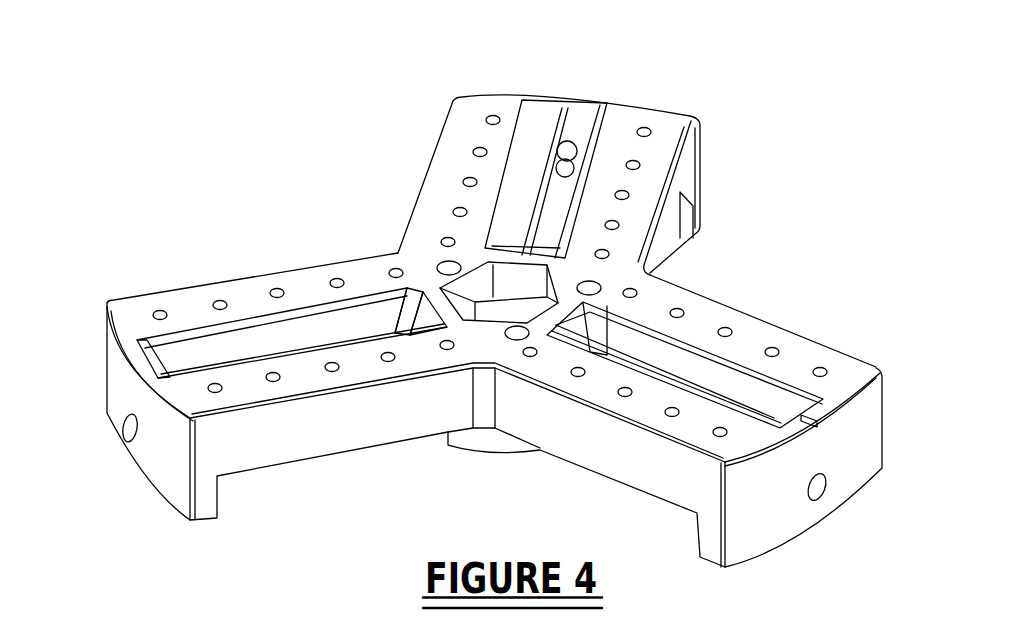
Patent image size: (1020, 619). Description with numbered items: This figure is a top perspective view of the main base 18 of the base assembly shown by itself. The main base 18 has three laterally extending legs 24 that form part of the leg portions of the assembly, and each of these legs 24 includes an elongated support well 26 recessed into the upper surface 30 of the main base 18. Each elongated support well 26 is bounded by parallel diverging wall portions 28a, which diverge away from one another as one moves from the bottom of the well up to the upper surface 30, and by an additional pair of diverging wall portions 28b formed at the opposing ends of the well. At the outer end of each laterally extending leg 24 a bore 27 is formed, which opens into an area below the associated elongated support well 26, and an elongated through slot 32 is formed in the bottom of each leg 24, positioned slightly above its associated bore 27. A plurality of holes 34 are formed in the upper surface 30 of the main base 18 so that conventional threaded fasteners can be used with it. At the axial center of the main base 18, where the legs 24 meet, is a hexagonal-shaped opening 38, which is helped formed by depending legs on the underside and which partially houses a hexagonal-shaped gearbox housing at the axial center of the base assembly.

The main base 18 is at (229, 191).
The laterally extending legs 24 is at (437, 142).
The elongated support well 26 is at (225, 336).
The bore 27 is at (124, 429).
The parallel diverging wall portions 28a is at (525, 221).
The diverging wall portions 28b is at (163, 362).
The upper surface 30 is at (352, 285).
The elongated through slot 32 is at (767, 420).
The holes 34 is at (277, 289).
The hexagonal-shaped opening 38 is at (468, 294).